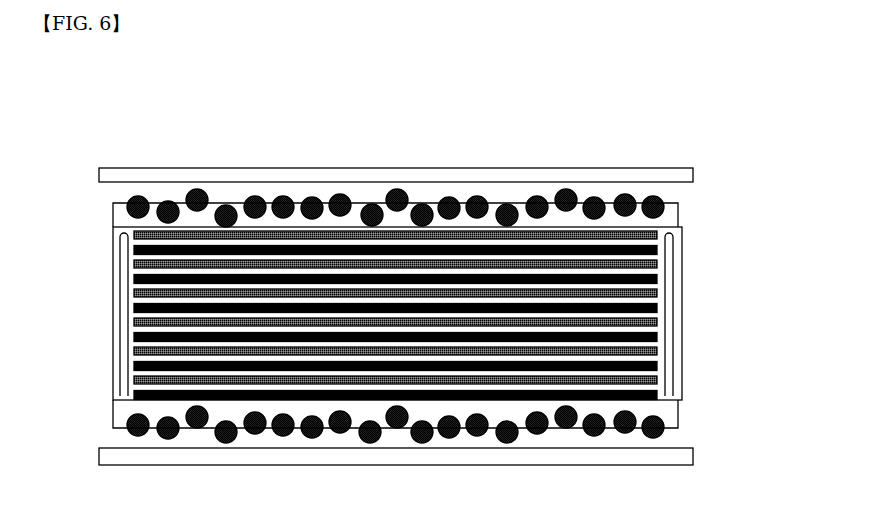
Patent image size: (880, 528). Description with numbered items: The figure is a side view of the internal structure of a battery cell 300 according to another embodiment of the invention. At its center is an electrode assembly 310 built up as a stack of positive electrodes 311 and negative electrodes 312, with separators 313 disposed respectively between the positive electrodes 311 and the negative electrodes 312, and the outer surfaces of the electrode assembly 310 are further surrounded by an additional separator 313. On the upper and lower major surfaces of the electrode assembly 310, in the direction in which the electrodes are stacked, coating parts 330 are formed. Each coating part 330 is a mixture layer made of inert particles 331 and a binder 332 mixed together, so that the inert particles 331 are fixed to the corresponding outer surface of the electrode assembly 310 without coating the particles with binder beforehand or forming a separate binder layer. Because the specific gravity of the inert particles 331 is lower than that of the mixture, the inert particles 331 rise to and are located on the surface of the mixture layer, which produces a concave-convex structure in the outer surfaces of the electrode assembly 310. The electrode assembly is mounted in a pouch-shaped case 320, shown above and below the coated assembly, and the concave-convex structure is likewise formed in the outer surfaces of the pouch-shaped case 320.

The battery cell 300 is at (68, 86).
The electrode assembly 310 is at (421, 311).
The positive electrodes 311 is at (348, 307).
The negative electrodes 312 is at (349, 323).
The separators 313 is at (89, 348).
The pouch-shaped case 320 is at (440, 299).
The coating parts 330 is at (366, 310).
The inert particles 331 is at (391, 310).
The binder 332 is at (218, 315).